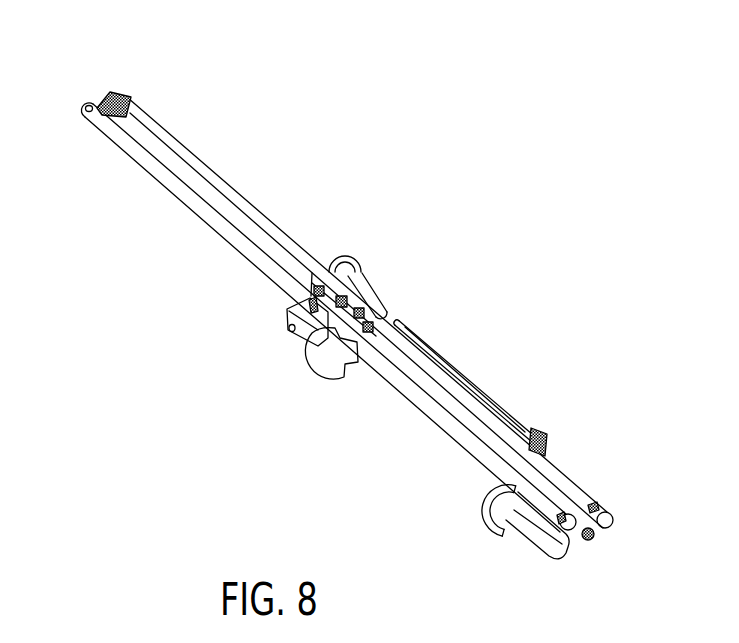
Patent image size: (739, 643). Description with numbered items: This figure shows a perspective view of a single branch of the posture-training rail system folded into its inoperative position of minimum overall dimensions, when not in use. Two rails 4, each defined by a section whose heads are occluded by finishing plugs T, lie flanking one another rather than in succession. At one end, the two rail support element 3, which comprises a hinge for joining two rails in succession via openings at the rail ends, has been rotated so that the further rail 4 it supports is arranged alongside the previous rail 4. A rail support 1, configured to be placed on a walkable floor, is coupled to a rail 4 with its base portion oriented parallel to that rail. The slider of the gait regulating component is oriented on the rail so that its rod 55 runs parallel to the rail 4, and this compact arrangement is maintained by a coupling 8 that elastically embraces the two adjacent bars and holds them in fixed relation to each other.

The coupling 8 is at (103, 83).
The finishing plug T is at (67, 92).
The rail 4 is at (248, 208).
The rod 55 is at (452, 370).
The rail support 1 is at (295, 347).
The two rail support element 3 is at (609, 550).